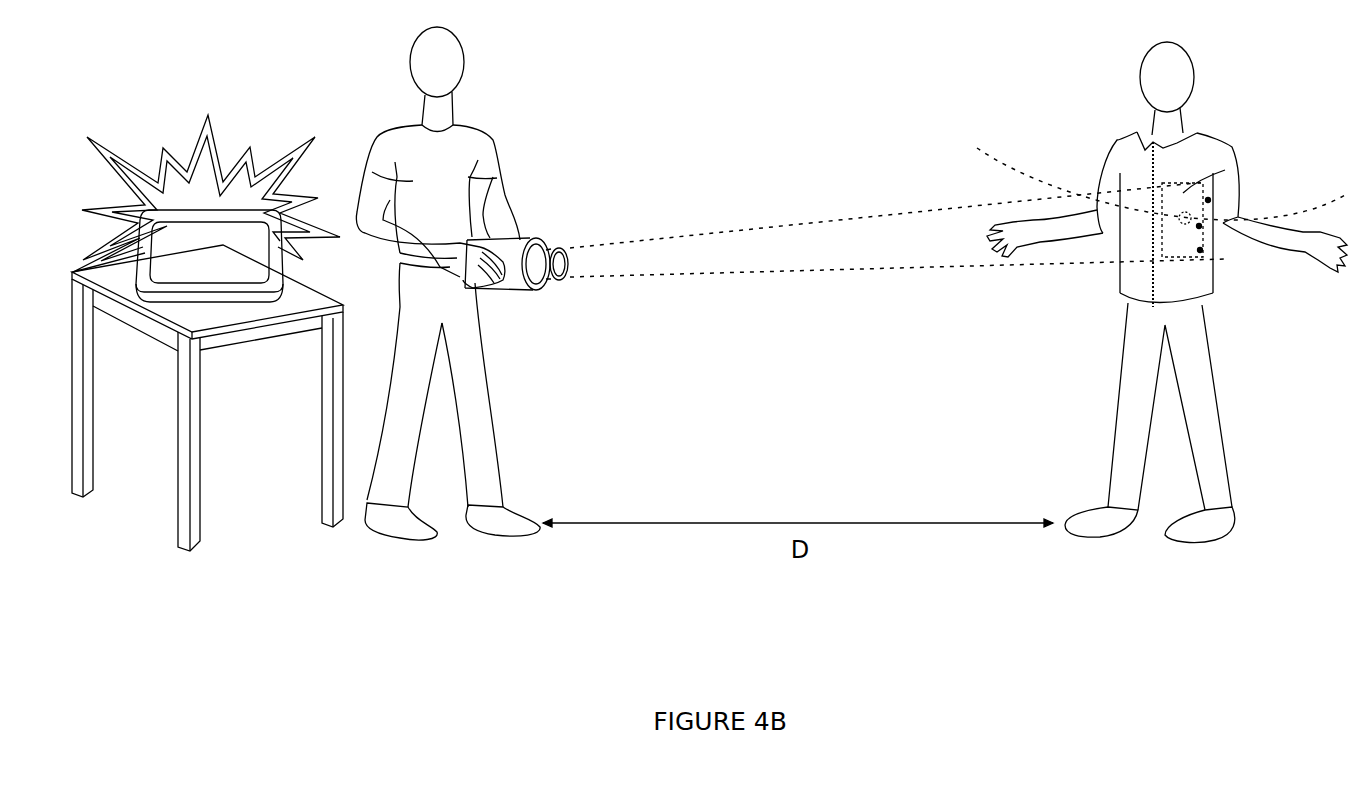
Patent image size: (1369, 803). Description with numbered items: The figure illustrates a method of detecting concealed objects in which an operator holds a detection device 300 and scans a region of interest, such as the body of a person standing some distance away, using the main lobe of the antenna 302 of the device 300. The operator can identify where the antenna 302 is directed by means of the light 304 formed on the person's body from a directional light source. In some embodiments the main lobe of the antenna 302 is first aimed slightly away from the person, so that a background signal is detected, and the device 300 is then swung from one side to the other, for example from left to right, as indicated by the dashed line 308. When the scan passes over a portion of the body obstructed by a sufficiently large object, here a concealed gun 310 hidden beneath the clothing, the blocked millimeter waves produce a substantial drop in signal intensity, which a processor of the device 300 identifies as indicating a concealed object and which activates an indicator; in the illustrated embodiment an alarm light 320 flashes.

The detection device 300 is at (547, 203).
The antenna 302 is at (560, 249).
The light 304 is at (1200, 250).
The dashed line 308 is at (1038, 183).
The concealed gun 310 is at (1183, 193).
The alarm light 320 is at (207, 216).